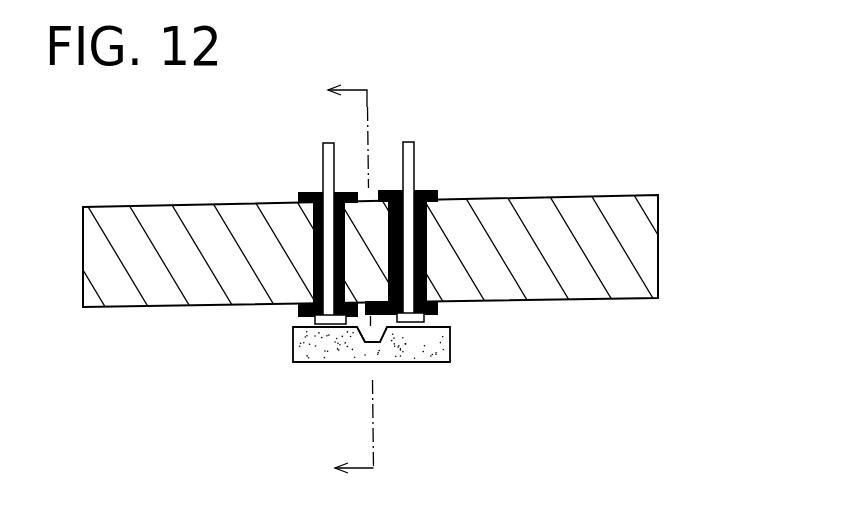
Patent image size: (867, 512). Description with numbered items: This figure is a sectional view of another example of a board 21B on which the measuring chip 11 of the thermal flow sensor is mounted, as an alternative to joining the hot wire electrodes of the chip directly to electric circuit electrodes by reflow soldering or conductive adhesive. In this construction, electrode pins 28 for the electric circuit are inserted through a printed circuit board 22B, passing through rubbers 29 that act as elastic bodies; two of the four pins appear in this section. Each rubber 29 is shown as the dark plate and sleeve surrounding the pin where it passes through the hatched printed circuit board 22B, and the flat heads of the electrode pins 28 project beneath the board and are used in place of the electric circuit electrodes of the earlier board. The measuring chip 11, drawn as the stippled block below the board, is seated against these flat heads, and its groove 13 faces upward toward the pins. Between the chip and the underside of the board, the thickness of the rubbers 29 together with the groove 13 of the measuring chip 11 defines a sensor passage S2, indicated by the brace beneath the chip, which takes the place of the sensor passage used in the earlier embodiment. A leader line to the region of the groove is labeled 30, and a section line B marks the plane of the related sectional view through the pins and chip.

The measuring chip 11 is at (450, 343).
The groove 13 is at (372, 318).
The board 21B is at (401, 195).
The printed circuit board 22B is at (645, 280).
The electrode pin 28 is at (323, 157).
The rubber 29 is at (300, 192).
The solder fillet 30 is at (358, 334).
The sensor passage S2 is at (353, 417).
The section line B- B is at (366, 278).